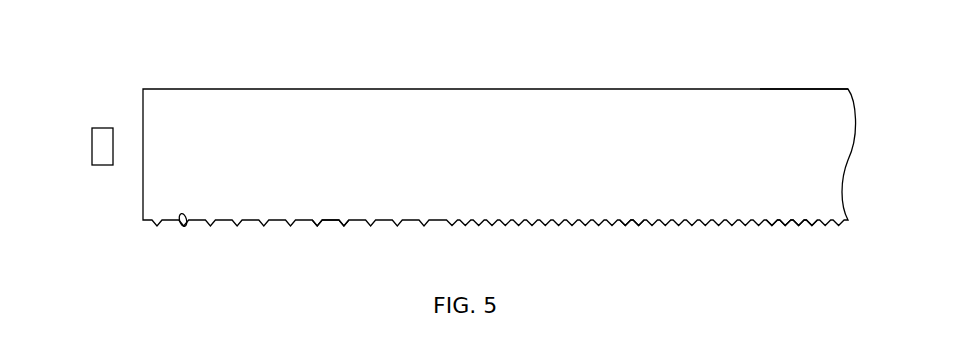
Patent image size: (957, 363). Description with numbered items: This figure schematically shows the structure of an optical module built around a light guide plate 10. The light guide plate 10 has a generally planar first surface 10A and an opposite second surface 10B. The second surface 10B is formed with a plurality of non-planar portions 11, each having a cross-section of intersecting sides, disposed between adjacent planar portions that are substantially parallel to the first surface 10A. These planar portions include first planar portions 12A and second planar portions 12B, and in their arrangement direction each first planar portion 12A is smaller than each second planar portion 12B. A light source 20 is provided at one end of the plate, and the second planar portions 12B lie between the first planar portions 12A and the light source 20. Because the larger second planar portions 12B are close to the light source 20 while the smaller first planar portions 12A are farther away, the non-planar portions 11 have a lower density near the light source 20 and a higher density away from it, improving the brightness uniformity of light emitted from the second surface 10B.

The light guide plate 10 is at (462, 102).
The first surface 10A is at (795, 89).
The second surface 10B is at (797, 229).
The non-planar portion 11 is at (183, 227).
The first planar portion 12A is at (632, 222).
The second planar portion 12B is at (330, 222).
The light source 20 is at (107, 128).